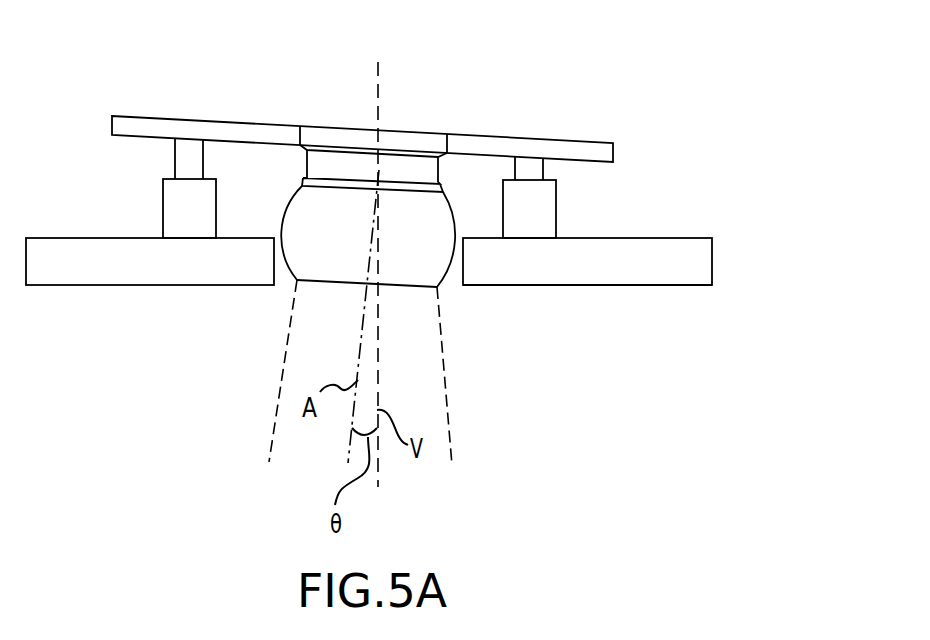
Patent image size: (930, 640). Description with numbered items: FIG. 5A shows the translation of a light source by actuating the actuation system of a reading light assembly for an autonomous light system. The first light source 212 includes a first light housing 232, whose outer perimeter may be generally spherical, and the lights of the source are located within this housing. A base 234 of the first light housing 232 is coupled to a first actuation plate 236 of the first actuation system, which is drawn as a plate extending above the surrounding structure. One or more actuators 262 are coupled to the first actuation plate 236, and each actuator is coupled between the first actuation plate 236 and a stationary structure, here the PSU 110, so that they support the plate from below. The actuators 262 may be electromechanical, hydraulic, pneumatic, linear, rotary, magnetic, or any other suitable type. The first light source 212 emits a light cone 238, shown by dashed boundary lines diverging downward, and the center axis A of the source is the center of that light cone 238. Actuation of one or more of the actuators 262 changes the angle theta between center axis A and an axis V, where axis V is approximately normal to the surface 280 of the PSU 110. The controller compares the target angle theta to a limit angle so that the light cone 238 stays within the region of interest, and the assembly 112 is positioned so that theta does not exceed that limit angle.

The PSU 110 is at (668, 270).
The lens assembly 112 is at (405, 103).
The first light source 212 is at (447, 300).
The first light housing 232 is at (438, 212).
The base 234 is at (325, 130).
The first actuation plate 236 is at (223, 130).
The light cone 238 is at (283, 359).
The actuators 262 is at (172, 210).
The surface 280 is at (561, 285).